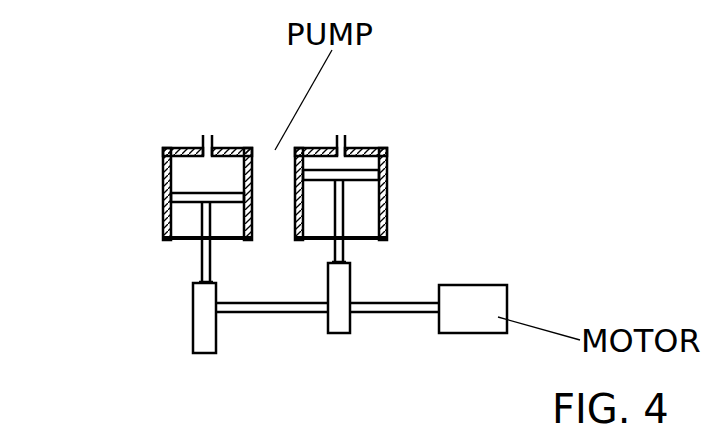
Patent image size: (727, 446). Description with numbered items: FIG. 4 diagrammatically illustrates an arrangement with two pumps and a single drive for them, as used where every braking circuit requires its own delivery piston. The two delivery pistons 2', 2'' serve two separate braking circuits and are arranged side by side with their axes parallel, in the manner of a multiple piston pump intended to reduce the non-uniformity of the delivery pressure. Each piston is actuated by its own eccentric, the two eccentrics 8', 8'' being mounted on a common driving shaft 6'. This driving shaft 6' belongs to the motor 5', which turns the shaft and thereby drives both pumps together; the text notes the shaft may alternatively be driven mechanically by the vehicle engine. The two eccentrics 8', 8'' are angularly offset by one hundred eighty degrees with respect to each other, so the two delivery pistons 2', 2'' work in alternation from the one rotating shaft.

The delivery piston 2' is at (151, 208).
The delivery piston 2'' is at (454, 198).
The eccentric 8' is at (132, 318).
The eccentric 8'' is at (323, 349).
The driving shaft 6' is at (327, 369).
The motor 5' is at (473, 360).